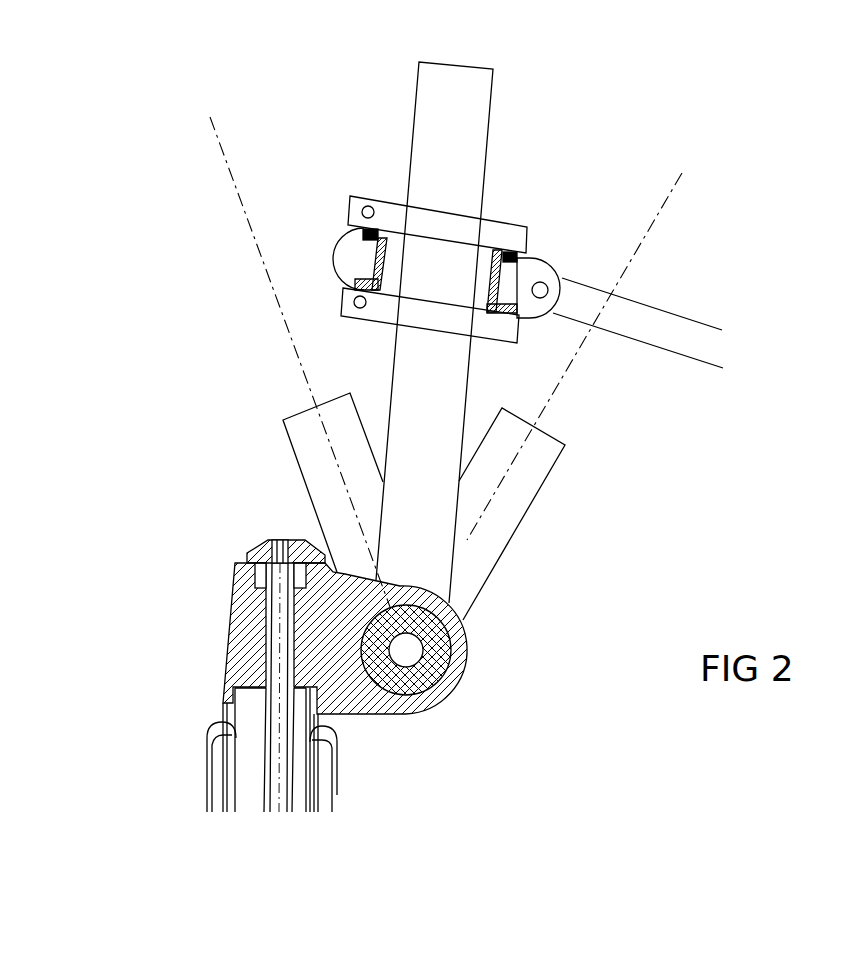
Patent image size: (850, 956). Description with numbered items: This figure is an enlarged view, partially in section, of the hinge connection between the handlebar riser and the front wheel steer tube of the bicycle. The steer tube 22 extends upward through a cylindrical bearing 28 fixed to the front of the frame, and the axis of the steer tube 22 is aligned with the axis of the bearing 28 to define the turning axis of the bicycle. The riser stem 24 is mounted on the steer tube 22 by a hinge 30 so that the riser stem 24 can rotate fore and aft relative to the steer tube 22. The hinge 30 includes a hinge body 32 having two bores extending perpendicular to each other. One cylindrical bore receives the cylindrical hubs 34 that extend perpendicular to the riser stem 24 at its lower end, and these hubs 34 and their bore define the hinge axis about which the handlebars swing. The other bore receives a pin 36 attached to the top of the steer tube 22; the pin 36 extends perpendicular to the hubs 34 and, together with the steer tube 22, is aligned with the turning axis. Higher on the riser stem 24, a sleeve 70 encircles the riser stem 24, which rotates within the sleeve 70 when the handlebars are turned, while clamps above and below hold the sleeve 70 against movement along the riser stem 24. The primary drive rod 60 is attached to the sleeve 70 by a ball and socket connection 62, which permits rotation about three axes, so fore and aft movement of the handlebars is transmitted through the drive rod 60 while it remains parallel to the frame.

The steer tube 22 is at (233, 799).
The riser stem 24 is at (397, 372).
The cylindrical bearing 28 is at (327, 792).
The hinge 30 is at (215, 605).
The hinge body 32 is at (237, 638).
The cylindrical hubs 34 is at (433, 670).
The pin 36 is at (318, 717).
The primary drive rod 60 is at (663, 322).
The ball and socket connection 62 is at (540, 292).
The sleeve 70 is at (403, 217).